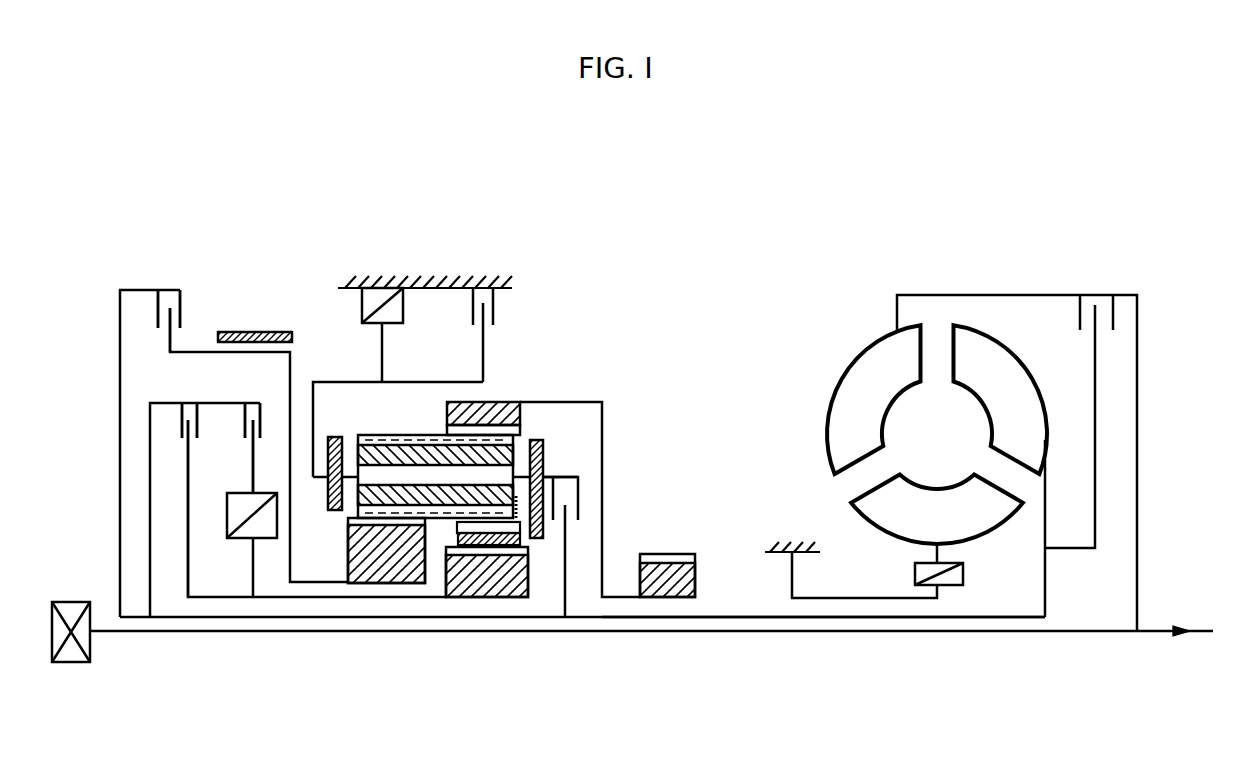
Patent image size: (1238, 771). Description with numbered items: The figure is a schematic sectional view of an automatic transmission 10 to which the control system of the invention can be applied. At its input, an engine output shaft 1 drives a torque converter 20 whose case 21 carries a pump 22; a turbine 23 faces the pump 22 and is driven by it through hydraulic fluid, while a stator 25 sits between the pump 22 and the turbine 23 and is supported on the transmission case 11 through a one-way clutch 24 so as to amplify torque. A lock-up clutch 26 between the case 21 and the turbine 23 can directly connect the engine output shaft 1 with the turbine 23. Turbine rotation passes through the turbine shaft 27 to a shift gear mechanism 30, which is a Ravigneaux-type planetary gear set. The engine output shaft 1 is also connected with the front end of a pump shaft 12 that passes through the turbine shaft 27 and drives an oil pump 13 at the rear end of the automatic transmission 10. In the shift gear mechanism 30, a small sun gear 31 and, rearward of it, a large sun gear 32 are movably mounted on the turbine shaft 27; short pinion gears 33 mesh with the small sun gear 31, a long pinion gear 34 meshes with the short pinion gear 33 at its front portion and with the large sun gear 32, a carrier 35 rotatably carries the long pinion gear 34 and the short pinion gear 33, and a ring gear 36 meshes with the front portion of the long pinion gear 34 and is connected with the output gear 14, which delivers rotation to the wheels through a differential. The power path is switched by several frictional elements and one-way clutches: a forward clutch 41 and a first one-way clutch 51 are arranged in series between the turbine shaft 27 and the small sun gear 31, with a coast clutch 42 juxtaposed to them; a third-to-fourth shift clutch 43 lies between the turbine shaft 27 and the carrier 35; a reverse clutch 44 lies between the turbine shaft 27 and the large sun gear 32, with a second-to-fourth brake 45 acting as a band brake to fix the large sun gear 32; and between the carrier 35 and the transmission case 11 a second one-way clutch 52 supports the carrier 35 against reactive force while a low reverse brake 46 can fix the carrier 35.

The engine output shaft 1 is at (1160, 631).
The automatic transmission 10 is at (362, 272).
The transmission case 11 is at (448, 286).
The pump shaft 12 is at (203, 632).
The oil pump 13 is at (76, 665).
The output gear 14 is at (660, 553).
The torque converter 20 is at (906, 401).
The case 21 is at (1000, 295).
The pump 22 is at (828, 413).
The turbine 23 is at (1005, 372).
The one-way clutch 24 is at (915, 575).
The stator 25 is at (937, 492).
The lock-up clutch 26 is at (1114, 320).
The turbine shaft 27 is at (733, 617).
The shift gear mechanism 30 is at (613, 404).
The small sun gear 31 is at (483, 598).
The large sun gear 32 is at (387, 584).
The short pinion gear 33 is at (505, 546).
The long pinion gear 34 is at (400, 457).
The carrier 35 is at (537, 438).
The ring gear 36 is at (498, 410).
The forward clutch 41 is at (263, 423).
The coast clutch 42 is at (197, 427).
The 3-4 clutch 43 is at (580, 488).
The reverse clutch 44 is at (180, 310).
The 2-4 brake 45 is at (256, 332).
The low reverse brake 46 is at (496, 316).
The first one-way clutch 51 is at (233, 505).
The second one-way clutch 52 is at (404, 306).